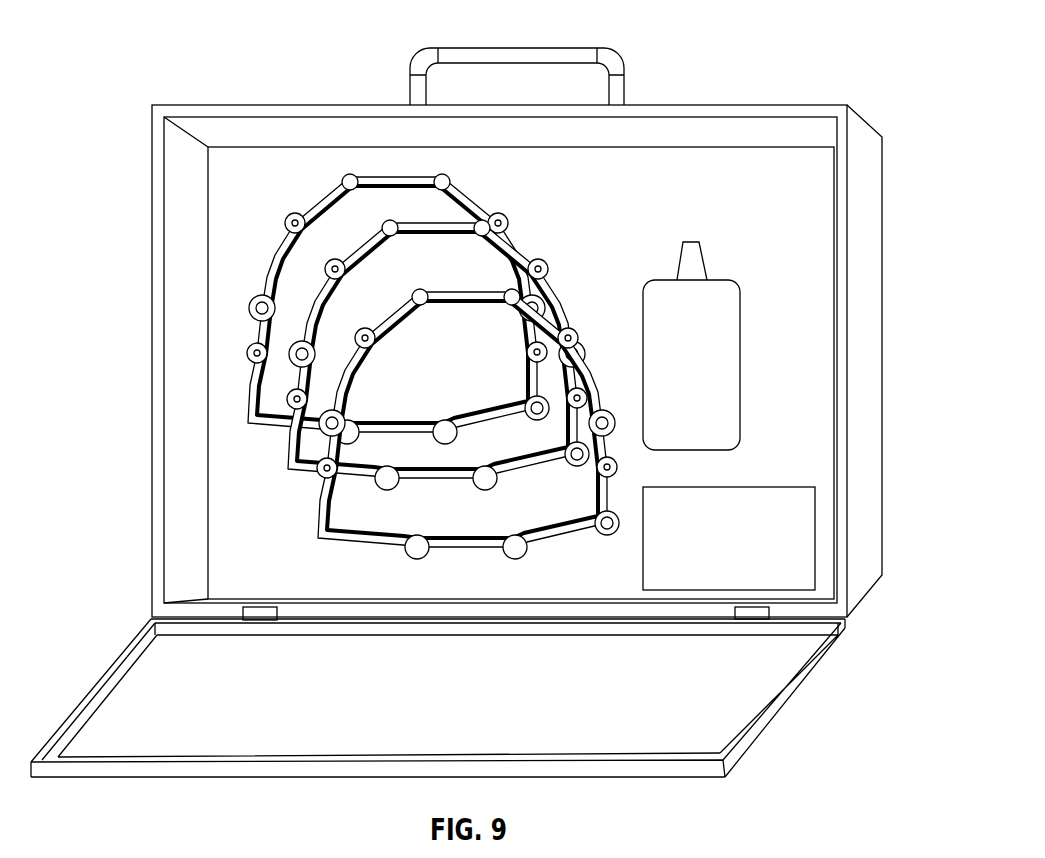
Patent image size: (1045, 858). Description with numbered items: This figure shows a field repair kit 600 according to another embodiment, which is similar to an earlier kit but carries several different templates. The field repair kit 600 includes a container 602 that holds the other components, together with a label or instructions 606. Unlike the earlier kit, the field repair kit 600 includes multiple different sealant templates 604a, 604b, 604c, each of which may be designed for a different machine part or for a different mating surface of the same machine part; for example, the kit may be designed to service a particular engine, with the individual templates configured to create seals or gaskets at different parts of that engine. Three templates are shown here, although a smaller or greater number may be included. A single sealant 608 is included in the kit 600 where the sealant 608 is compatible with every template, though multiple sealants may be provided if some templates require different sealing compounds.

The field repair kit 600 is at (489, 397).
The container 602 is at (695, 105).
The sealant template 604a is at (308, 270).
The sealant template 604b is at (330, 378).
The sealant template 604c is at (388, 467).
The instructions 606 is at (783, 552).
The sealant 608 is at (686, 402).